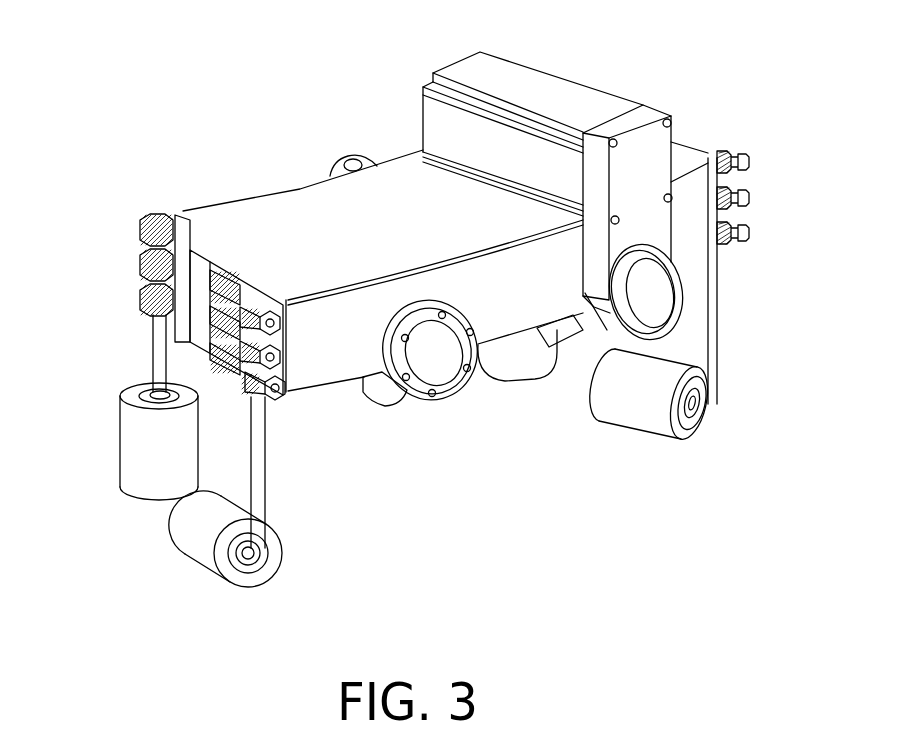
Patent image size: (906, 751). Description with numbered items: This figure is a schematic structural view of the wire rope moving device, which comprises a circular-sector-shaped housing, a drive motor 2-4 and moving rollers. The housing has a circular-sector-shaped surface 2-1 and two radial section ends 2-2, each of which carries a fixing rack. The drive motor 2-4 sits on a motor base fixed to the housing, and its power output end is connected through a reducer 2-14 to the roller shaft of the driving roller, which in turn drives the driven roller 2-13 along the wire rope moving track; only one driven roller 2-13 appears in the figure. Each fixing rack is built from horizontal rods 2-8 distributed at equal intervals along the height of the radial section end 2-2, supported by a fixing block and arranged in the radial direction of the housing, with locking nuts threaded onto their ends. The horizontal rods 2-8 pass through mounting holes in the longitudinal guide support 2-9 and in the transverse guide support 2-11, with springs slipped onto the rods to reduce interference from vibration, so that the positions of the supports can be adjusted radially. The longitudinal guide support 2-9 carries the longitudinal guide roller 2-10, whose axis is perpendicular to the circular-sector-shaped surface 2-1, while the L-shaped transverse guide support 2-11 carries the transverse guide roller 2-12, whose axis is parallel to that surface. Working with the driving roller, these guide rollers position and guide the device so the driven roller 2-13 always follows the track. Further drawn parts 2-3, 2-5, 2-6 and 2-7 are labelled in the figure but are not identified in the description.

The circular-sector-shaped surface 2-1 is at (430, 225).
The radial section ends 2-2 is at (190, 220).
The positioning pin 2-3 is at (340, 162).
The drive motor 2-4 is at (532, 96).
The fastening bolt 2-5 is at (672, 122).
The connector 2-6 is at (650, 277).
The locking nut 2-7 is at (145, 257).
The horizontal rods 2-8 is at (147, 293).
The longitudinal guide support 2-9 is at (152, 363).
The longitudinal guide roller 2-10 is at (143, 475).
The transverse guide support 2-11 is at (252, 508).
The transverse guide roller 2-12 is at (247, 575).
The driven roller 2-13 is at (372, 400).
The reducer 2-14 is at (637, 123).